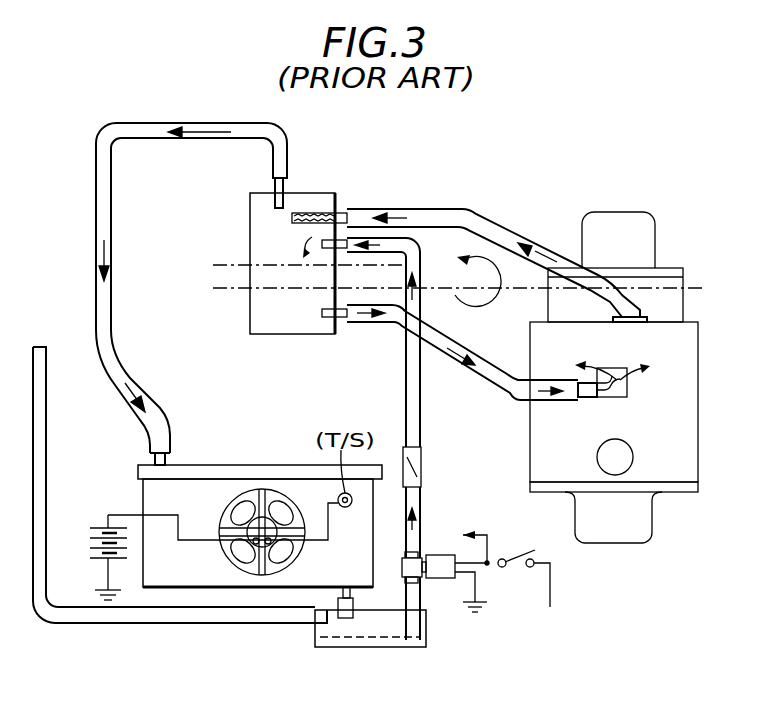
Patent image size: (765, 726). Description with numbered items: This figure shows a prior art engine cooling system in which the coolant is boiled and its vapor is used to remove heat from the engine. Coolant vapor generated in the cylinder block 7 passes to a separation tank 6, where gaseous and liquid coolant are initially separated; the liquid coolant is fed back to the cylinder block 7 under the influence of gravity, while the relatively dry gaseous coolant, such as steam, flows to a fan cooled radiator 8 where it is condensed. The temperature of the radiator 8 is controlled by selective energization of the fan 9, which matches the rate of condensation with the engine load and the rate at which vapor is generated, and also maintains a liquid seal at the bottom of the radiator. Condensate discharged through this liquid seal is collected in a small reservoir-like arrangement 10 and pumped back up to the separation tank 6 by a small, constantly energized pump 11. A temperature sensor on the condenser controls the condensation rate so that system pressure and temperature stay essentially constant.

The separation tank 6 is at (250, 217).
The cylinder block 7 is at (665, 278).
The fan cooled radiator 8 is at (155, 495).
The fan 9 is at (226, 556).
The reservoir-like arrangement 10 is at (337, 648).
The pump 11 is at (445, 582).